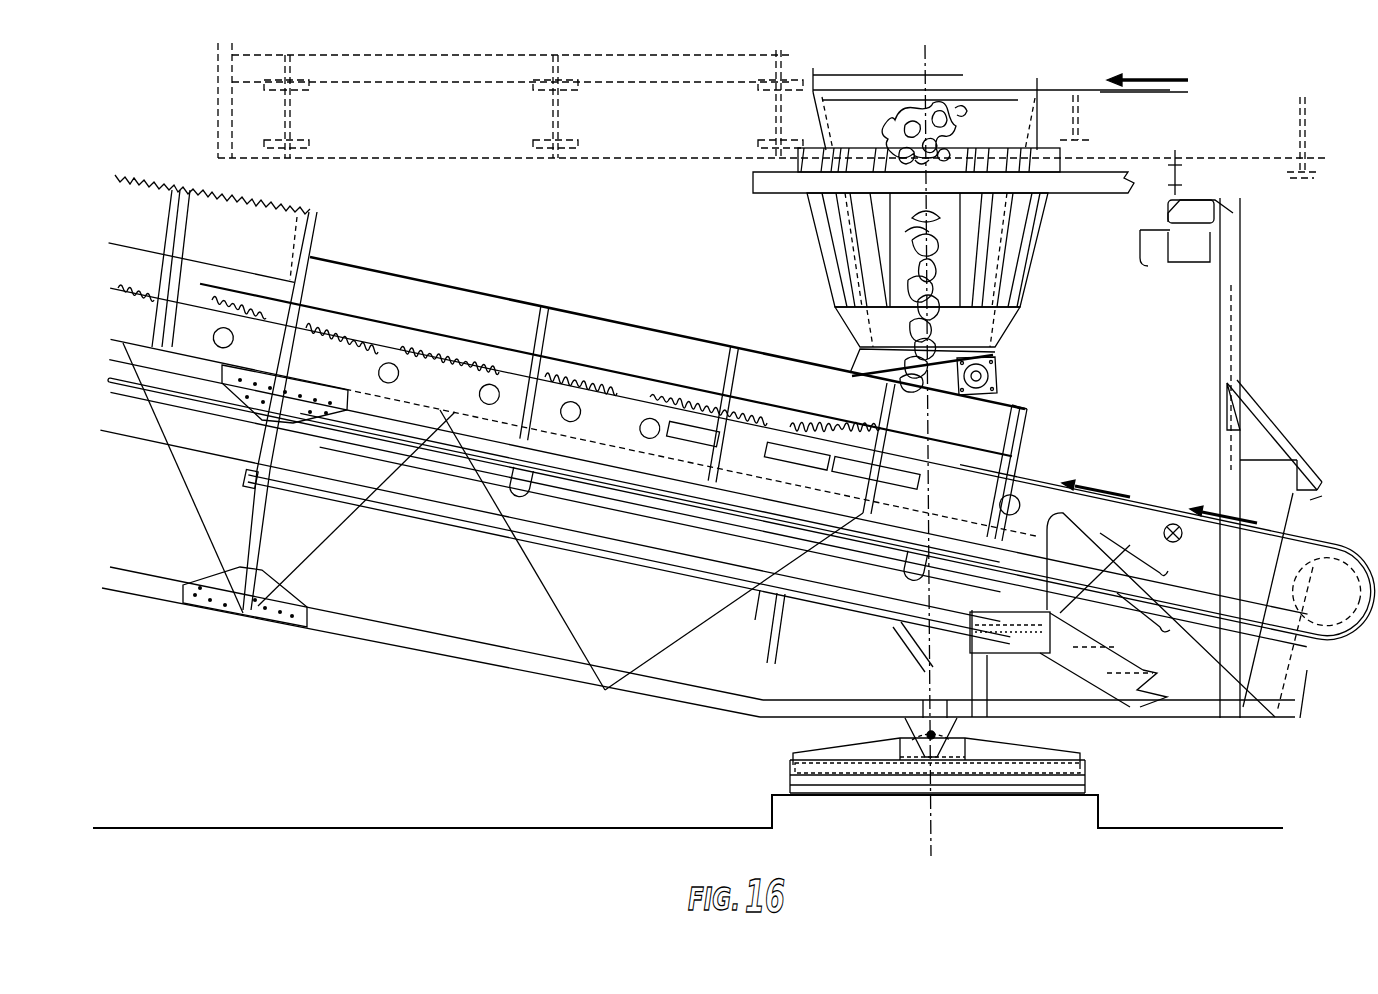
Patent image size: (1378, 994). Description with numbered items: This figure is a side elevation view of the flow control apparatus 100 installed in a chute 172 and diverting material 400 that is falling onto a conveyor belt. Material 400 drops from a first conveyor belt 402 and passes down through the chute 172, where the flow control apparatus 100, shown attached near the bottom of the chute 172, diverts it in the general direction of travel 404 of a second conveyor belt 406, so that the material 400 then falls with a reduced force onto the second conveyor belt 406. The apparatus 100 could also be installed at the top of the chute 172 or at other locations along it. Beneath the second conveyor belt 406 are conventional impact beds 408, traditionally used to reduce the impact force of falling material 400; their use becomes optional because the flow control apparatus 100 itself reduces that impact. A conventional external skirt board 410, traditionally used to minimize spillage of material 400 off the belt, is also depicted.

The material 400 is at (953, 249).
The first conveyor belt 402 is at (1112, 92).
The chute 172 is at (1010, 328).
The flow control apparatus 100 is at (994, 374).
The external skirt board 410 is at (958, 452).
The second conveyor belt 406 is at (1028, 466).
The general direction of travel 404 is at (1100, 490).
The impact beds 408 is at (935, 490).